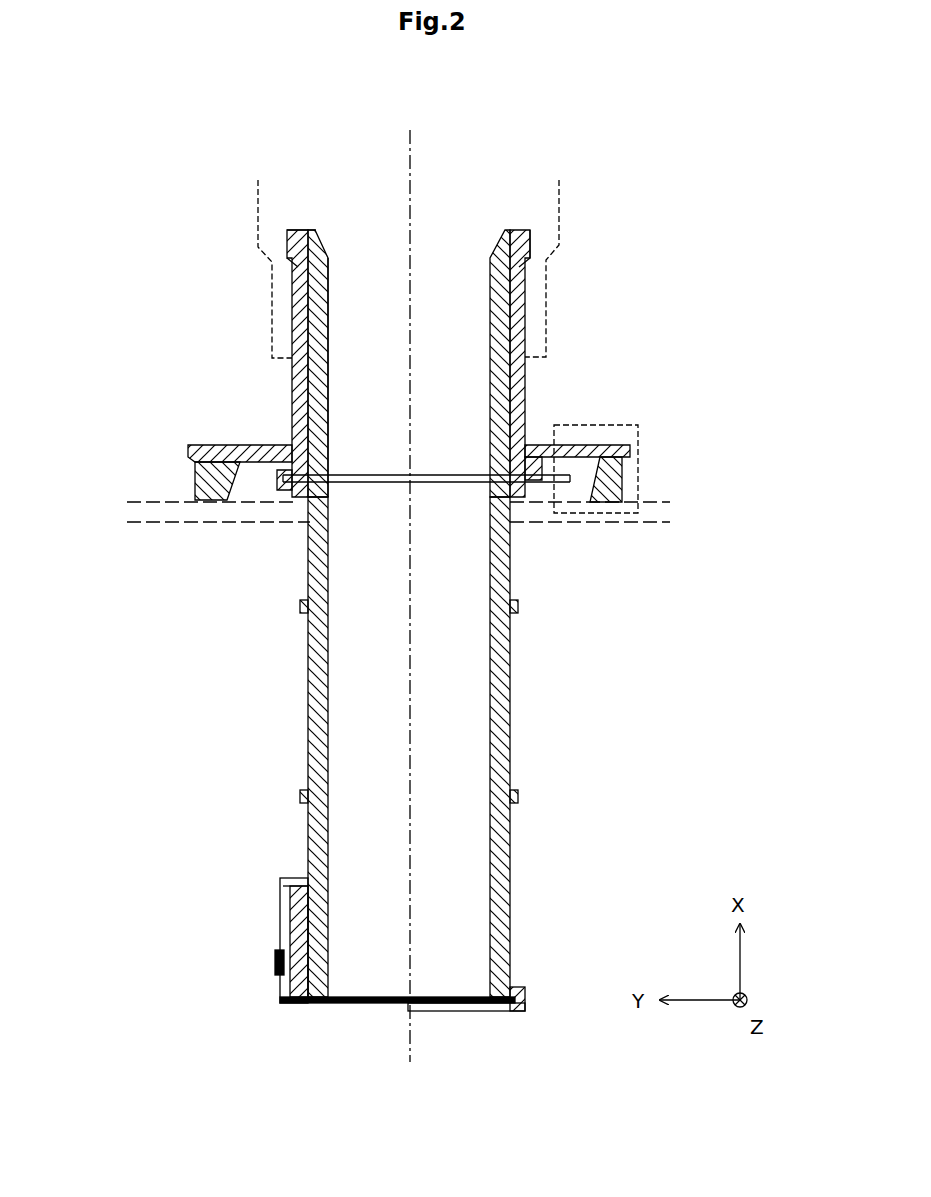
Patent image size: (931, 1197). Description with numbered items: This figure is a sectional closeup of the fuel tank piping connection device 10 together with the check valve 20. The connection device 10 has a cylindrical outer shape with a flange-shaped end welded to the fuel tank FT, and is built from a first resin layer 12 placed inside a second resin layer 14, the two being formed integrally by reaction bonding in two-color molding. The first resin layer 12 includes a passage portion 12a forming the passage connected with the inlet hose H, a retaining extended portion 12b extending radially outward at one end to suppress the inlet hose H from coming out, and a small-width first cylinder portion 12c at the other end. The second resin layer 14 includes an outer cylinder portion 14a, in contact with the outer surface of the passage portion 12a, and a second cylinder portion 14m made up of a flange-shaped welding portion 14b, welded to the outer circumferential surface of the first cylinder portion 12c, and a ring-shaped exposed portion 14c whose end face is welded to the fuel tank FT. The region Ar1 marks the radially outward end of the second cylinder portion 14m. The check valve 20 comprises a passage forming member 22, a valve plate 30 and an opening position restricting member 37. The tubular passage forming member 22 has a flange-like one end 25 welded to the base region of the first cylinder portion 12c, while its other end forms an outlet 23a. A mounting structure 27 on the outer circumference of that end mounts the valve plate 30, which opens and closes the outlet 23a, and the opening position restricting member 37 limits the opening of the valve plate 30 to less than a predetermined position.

The fuel tank piping connection device 10 is at (167, 275).
The first resin layer 12 is at (302, 292).
The passage portion 12a is at (290, 231).
The retaining extended portion 12b is at (328, 278).
The first cylinder portion 12c is at (248, 452).
The second resin layer 14 is at (294, 352).
The outer cylinder portion 14a is at (529, 300).
The welding portion 14b is at (578, 418).
The exposed portion 14c is at (610, 418).
The second cylinder portion 14m is at (632, 338).
The inlet hose H is at (256, 232).
The fuel tank FT is at (139, 500).
The region Ar1 is at (641, 472).
The check valve 20 is at (284, 683).
The passage forming member 22 is at (306, 750).
The one end 25 is at (294, 490).
The mounting structure 27 is at (280, 935).
The valve plate 30 is at (408, 995).
The outlet 23a is at (466, 999).
The opening position restricting member 37 is at (403, 1050).